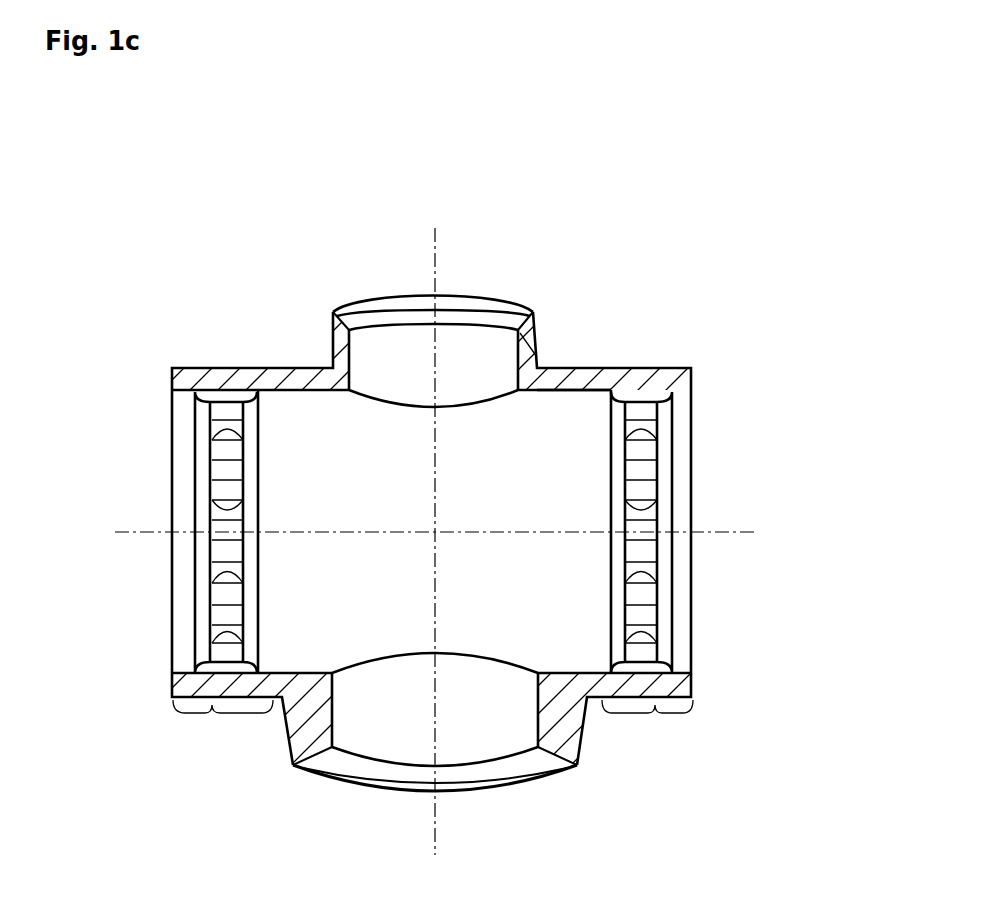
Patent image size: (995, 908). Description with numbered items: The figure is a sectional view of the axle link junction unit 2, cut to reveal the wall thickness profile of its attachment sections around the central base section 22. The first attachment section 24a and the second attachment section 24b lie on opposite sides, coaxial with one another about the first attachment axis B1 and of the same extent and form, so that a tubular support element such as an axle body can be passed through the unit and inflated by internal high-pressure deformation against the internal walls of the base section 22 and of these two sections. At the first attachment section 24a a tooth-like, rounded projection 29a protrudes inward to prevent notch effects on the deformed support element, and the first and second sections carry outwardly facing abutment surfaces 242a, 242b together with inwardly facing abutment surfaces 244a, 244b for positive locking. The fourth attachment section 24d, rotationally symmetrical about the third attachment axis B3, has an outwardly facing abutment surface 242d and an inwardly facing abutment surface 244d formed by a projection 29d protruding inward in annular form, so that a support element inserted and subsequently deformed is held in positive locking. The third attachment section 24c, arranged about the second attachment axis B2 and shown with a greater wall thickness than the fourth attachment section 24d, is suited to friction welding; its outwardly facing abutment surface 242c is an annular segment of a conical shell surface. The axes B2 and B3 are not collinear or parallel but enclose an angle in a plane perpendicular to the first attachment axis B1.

The axle link junction unit 2 is at (602, 300).
The base section 22 is at (467, 497).
The first attachment section 24a is at (657, 722).
The second attachment section 24b is at (213, 723).
The third attachment section 24c is at (599, 735).
The fourth attachment section 24d is at (327, 340).
The first outwardly facing abutment surface 242a is at (672, 655).
The second outwardly facing abutment surface 242b is at (200, 662).
The third outwardly facing abutment surface 242c is at (552, 773).
The fourth outwardly facing abutment surface 242d is at (370, 300).
The inwardly facing abutment surface of first attachment section 244a is at (637, 370).
The inwardly facing abutment surface of second attachment section 244b is at (252, 402).
The inwardly facing abutment surface of fourth attachment section 244d is at (540, 357).
The projection of first attachment section 29a is at (637, 572).
The projection of fourth attachment section 29d is at (503, 328).
The first attachment axis B1 is at (283, 532).
The second attachment axis B2 is at (437, 597).
The third attachment axis B3 is at (435, 468).